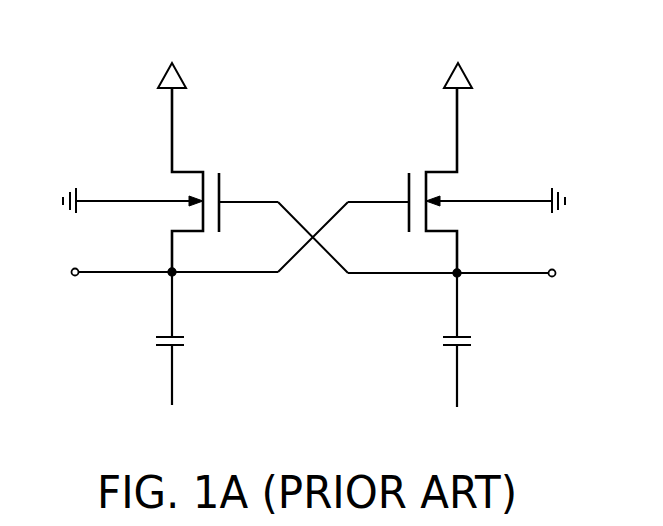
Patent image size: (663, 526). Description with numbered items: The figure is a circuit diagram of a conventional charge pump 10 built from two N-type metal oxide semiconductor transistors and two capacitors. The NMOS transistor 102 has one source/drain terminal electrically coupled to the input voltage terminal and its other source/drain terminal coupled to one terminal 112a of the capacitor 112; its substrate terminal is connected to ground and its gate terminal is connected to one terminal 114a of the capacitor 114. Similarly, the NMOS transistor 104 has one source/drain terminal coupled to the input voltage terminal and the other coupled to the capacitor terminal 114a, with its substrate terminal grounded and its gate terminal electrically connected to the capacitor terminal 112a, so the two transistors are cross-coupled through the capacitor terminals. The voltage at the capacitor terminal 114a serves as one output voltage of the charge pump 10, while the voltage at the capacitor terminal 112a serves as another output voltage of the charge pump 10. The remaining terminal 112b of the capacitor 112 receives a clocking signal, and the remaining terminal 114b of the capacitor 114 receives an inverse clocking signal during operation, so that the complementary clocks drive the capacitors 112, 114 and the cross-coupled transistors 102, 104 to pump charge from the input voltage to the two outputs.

The charge pump 10 is at (570, 90).
The NMOS transistor 102 is at (233, 190).
The NMOS transistor 104 is at (398, 190).
The capacitor 112 is at (157, 348).
The capacitor terminal 112a is at (171, 305).
The capacitor terminal 112b is at (115, 375).
The capacitor 114 is at (483, 348).
The capacitor terminal 114a is at (458, 307).
The capacitor terminal 114b is at (458, 375).